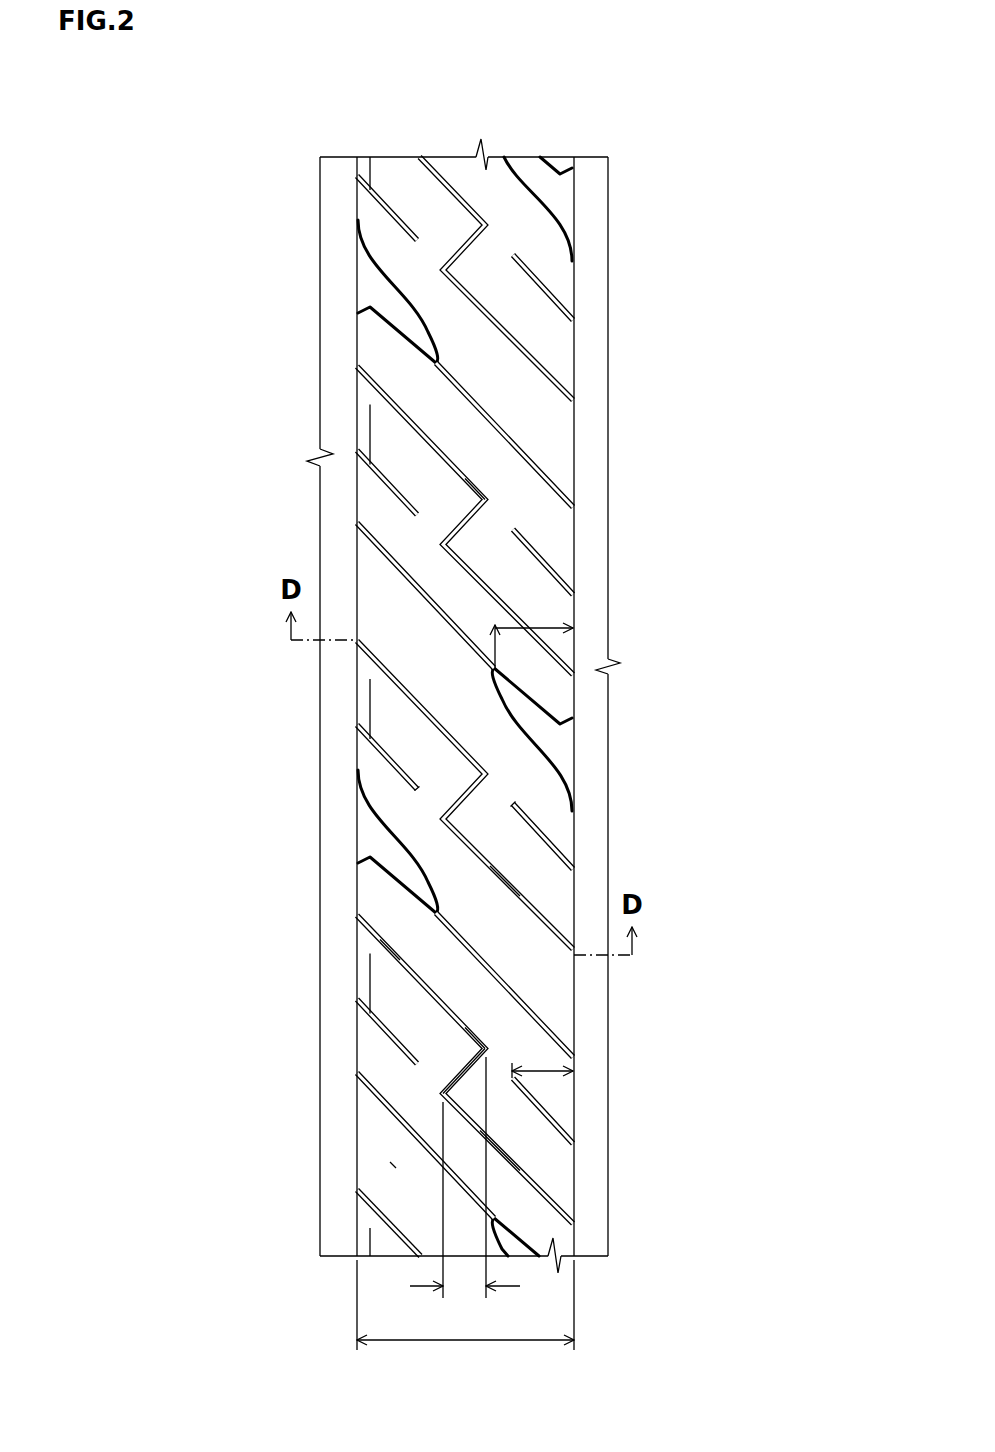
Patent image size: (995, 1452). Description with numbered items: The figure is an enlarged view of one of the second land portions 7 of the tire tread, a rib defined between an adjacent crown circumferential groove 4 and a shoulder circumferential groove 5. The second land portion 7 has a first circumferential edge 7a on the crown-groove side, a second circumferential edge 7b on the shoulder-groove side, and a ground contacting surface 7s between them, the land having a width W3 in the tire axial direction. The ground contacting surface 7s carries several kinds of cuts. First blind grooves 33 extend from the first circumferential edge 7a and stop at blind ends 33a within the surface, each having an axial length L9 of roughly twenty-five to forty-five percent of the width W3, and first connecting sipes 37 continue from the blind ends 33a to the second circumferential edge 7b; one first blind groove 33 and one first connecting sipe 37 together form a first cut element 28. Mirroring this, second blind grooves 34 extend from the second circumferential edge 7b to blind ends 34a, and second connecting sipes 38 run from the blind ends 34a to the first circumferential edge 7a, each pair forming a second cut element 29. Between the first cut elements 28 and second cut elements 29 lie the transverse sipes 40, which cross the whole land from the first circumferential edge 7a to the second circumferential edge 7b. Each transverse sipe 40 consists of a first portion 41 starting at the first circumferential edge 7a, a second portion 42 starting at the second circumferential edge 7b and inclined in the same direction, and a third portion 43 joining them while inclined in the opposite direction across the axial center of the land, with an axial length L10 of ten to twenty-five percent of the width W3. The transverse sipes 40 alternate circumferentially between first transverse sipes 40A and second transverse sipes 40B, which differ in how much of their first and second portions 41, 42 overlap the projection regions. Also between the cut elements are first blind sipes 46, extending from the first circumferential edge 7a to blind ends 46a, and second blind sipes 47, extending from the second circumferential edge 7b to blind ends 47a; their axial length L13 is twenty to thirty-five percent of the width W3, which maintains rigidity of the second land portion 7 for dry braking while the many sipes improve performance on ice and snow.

The crown circumferential groove 4 is at (590, 207).
The shoulder circumferential groove 5 is at (340, 207).
The second land portion 7 is at (433, 222).
The first circumferential edge 7a is at (574, 1172).
The second circumferential edge 7b is at (357, 1172).
The ground contacting surface 7s is at (393, 1165).
The first cut element 28 is at (564, 706).
The second cut element 29 is at (445, 638).
The first blind groove 33 is at (530, 725).
The blind end of first blind groove 33a is at (497, 667).
The second blind groove 34 is at (400, 317).
The blind end of second blind groove 34a is at (436, 363).
The first connecting sipe 37 is at (463, 637).
The second connecting sipe 38 is at (463, 398).
The transverse sipe 40 is at (410, 698).
The first transverse sipe 40A is at (473, 487).
The second transverse sipe 40B is at (509, 885).
The first portion 41 is at (503, 1147).
The second portion 42 is at (400, 960).
The third portion 43 is at (460, 1070).
The first blind sipe 46 is at (541, 556).
The blind end of first blind sipe 46a is at (514, 803).
The second blind sipe 47 is at (390, 490).
The blind end of second blind sipe 47a is at (418, 795).
The length of first blind groove L9 is at (540, 627).
The length of third portion L10 is at (465, 1190).
The length of blind sipe L13 is at (545, 1071).
The width of second land portion W3 is at (465, 1318).